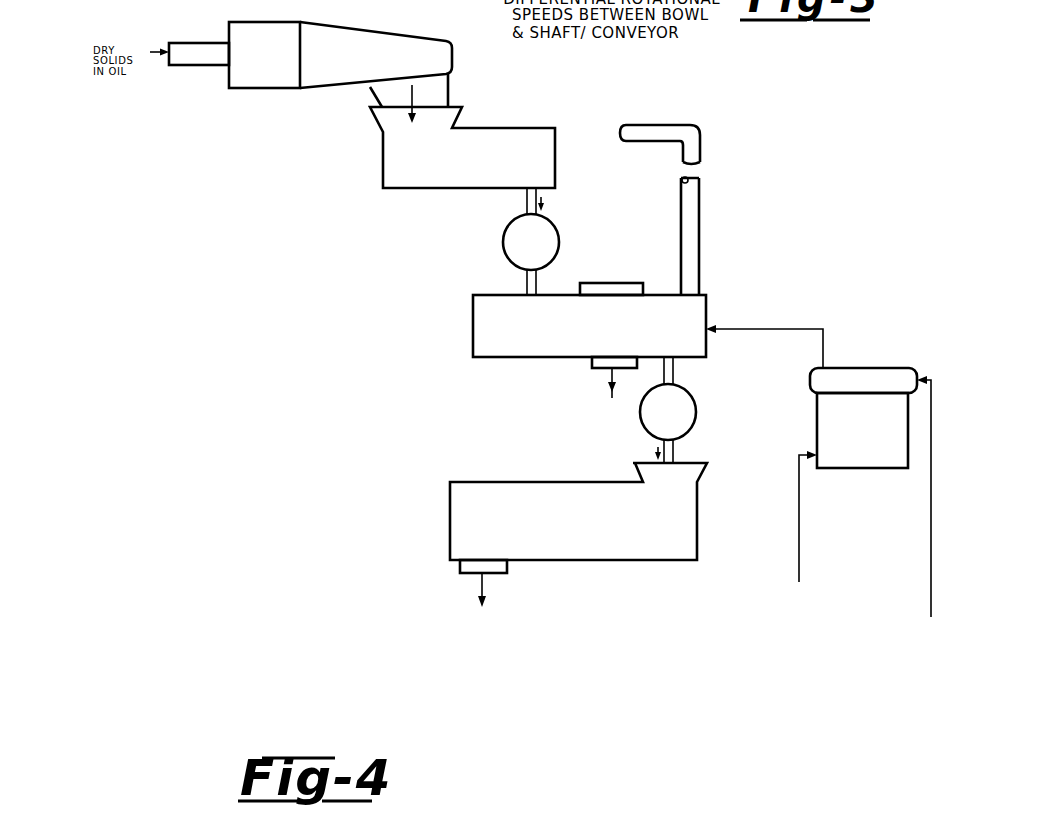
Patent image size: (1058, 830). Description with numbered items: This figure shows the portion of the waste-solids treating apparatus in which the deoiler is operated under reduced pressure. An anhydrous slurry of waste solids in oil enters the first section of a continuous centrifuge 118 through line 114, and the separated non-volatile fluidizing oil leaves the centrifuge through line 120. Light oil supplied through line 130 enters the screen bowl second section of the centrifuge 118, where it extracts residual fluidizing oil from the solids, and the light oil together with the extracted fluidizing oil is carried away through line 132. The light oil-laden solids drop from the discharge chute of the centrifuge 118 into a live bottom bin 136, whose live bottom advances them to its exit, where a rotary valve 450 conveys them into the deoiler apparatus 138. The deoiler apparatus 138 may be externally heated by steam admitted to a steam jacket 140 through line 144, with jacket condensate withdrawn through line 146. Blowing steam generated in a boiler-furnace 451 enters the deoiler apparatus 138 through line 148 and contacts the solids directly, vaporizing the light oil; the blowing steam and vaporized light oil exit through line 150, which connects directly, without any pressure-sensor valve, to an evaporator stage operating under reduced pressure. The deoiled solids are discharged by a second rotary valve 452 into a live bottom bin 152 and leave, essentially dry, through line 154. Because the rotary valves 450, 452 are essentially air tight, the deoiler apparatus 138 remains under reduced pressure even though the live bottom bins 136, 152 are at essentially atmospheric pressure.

The line 114 is at (151, 52).
The continuous centrifuge 118 is at (272, 22).
The line 120 is at (246, 114).
The line 130 is at (197, 72).
The line 132 is at (272, 114).
The live bottom bin 136 is at (524, 128).
The deoiler apparatus 138 is at (707, 306).
The steam jacket 140 is at (603, 262).
The line 144 is at (613, 276).
The line 146 is at (608, 378).
The line 148 is at (733, 328).
The line 150 is at (699, 252).
The live bottom bin 152 is at (698, 517).
The line 154 is at (485, 583).
The rotary valve 450 is at (504, 244).
The boiler-furnace 451 is at (867, 368).
The rotary valve 452 is at (696, 400).